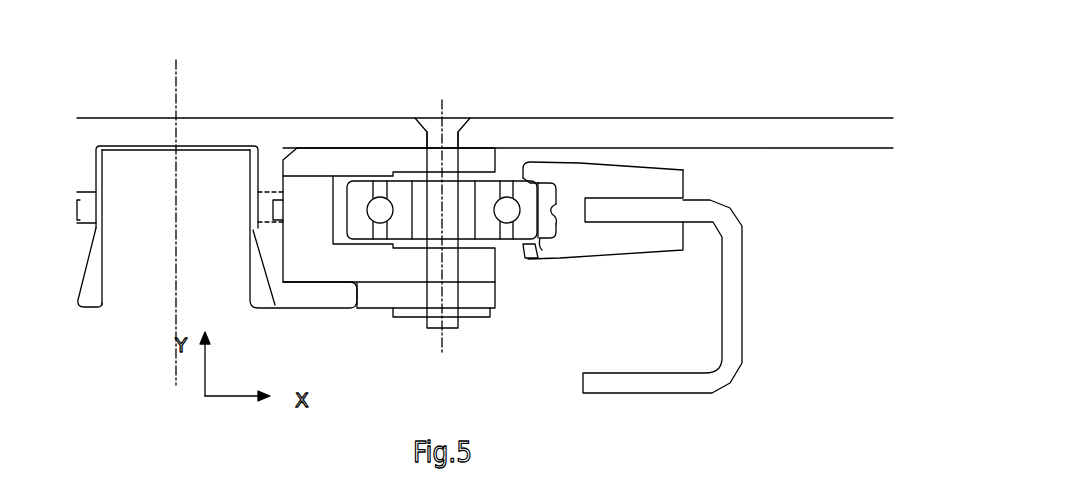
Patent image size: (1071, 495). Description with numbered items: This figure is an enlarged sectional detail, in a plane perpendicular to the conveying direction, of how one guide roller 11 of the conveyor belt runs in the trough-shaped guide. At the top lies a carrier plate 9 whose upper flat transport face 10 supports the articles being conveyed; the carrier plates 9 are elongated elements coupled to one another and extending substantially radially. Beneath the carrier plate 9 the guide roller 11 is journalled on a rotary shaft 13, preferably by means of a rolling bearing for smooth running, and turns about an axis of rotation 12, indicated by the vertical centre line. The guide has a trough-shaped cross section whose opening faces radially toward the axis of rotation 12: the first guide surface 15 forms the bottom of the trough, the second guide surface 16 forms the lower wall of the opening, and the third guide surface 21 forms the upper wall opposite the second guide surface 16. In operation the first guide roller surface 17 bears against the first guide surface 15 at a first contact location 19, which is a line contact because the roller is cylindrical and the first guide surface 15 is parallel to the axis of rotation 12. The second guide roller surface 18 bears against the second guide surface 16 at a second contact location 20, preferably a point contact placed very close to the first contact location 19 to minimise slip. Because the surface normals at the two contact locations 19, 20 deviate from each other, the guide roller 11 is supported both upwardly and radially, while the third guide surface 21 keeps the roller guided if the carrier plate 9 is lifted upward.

The carrier plate 9 is at (270, 113).
The upper flat transport face 10 is at (243, 117).
The guide roller 11 is at (363, 192).
The axis of rotation 12 is at (443, 135).
The rotary shaft 13 is at (452, 138).
The first guide surface 15 is at (556, 214).
The second guide surface 16 is at (556, 240).
The first guide roller surface 17 is at (542, 196).
The second guide roller surface 18 is at (535, 244).
The first contact location 19 is at (549, 202).
The second contact location 20 is at (540, 250).
The third guide surface 21 is at (526, 179).